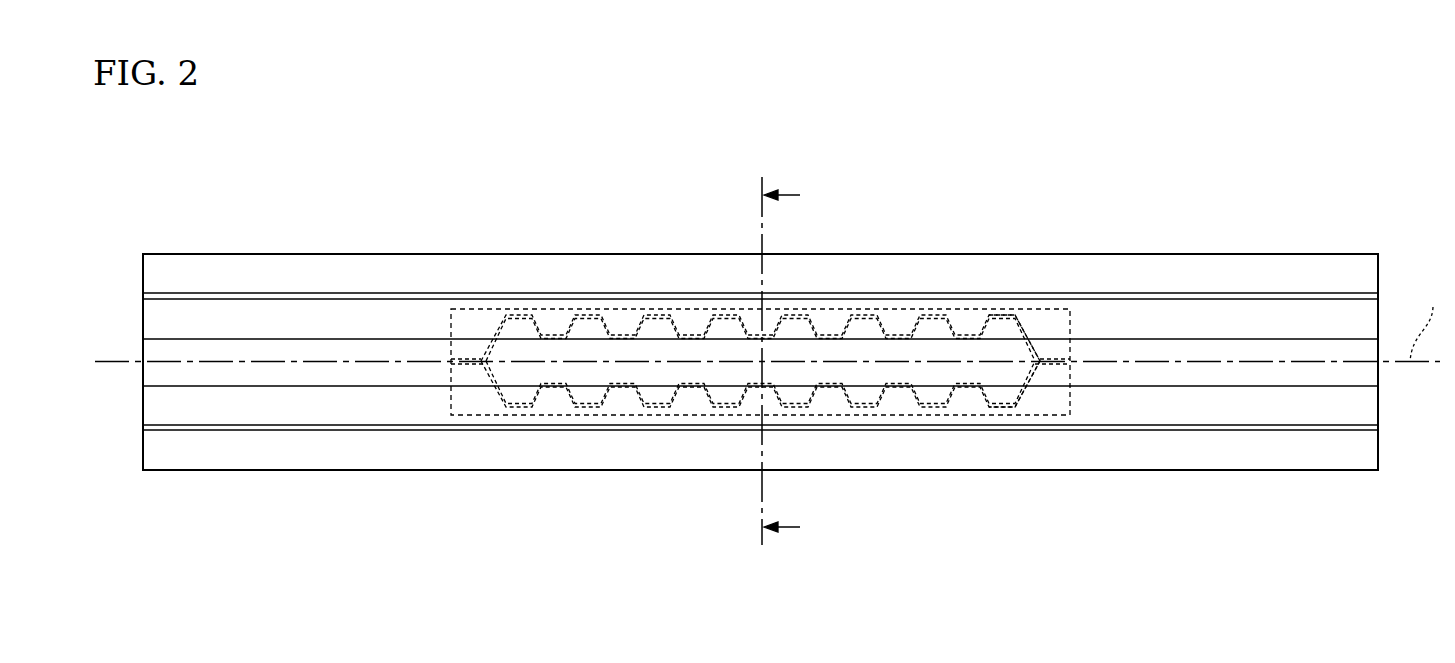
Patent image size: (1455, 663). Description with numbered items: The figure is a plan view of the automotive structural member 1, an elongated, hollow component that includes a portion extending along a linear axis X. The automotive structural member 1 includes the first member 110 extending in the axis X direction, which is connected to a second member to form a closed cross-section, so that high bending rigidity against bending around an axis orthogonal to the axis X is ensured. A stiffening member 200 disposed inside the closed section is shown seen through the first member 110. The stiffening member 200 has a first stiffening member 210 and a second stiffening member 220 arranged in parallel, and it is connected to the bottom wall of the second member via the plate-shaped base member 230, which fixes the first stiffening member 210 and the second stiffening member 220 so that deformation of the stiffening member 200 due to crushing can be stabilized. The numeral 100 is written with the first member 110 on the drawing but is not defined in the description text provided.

The automotive structural member 1 is at (378, 243).
The electrode 100 is at (760, 407).
The first member 110 is at (1289, 448).
The stiffening member 200 is at (760, 465).
The first stiffening member 210 is at (933, 408).
The second stiffening member 220 is at (1006, 318).
The base member 230 is at (482, 415).